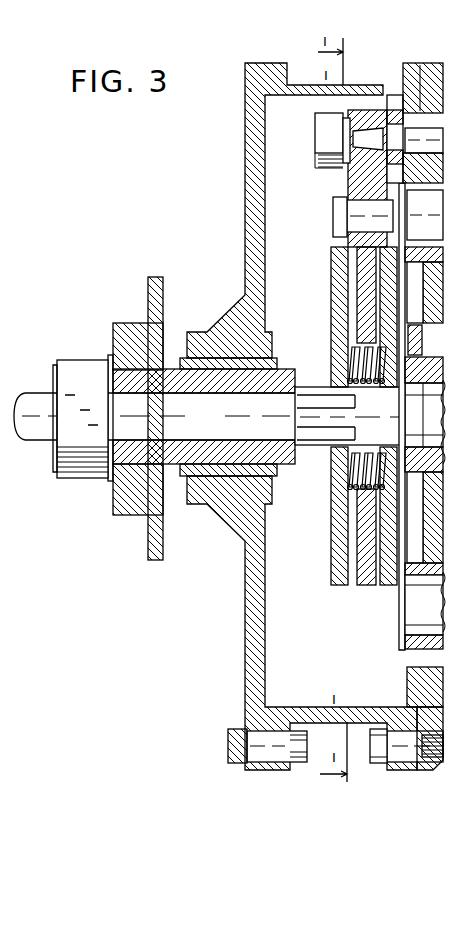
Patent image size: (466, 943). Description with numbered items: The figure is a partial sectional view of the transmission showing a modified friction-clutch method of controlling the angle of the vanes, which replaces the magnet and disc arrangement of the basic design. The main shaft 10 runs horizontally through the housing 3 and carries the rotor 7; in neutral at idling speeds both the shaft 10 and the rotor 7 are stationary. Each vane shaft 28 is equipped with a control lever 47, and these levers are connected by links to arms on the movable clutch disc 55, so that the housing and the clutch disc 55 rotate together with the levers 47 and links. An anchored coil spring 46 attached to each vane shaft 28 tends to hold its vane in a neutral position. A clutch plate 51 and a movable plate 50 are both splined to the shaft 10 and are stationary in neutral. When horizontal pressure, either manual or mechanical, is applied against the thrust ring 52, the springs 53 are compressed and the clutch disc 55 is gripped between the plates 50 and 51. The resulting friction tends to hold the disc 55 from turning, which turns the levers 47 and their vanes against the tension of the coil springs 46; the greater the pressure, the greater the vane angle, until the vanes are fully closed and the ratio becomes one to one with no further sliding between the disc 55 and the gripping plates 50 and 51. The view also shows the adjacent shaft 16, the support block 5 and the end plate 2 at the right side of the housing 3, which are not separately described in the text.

The end plate 2 is at (443, 717).
The housing 3 is at (247, 309).
The ring gear support 5 is at (425, 687).
The rotor 7 is at (430, 299).
The shaft 10 is at (232, 418).
The output shaft 16 is at (425, 610).
The vane shaft 28 is at (316, 143).
The coil spring 46 is at (388, 113).
The lever 47 is at (350, 182).
The movable plate 50 is at (331, 302).
The clutch plate 51 is at (388, 586).
The thrust ring 52 is at (153, 300).
The spring 53 is at (350, 360).
The clutch disc 55 is at (350, 247).